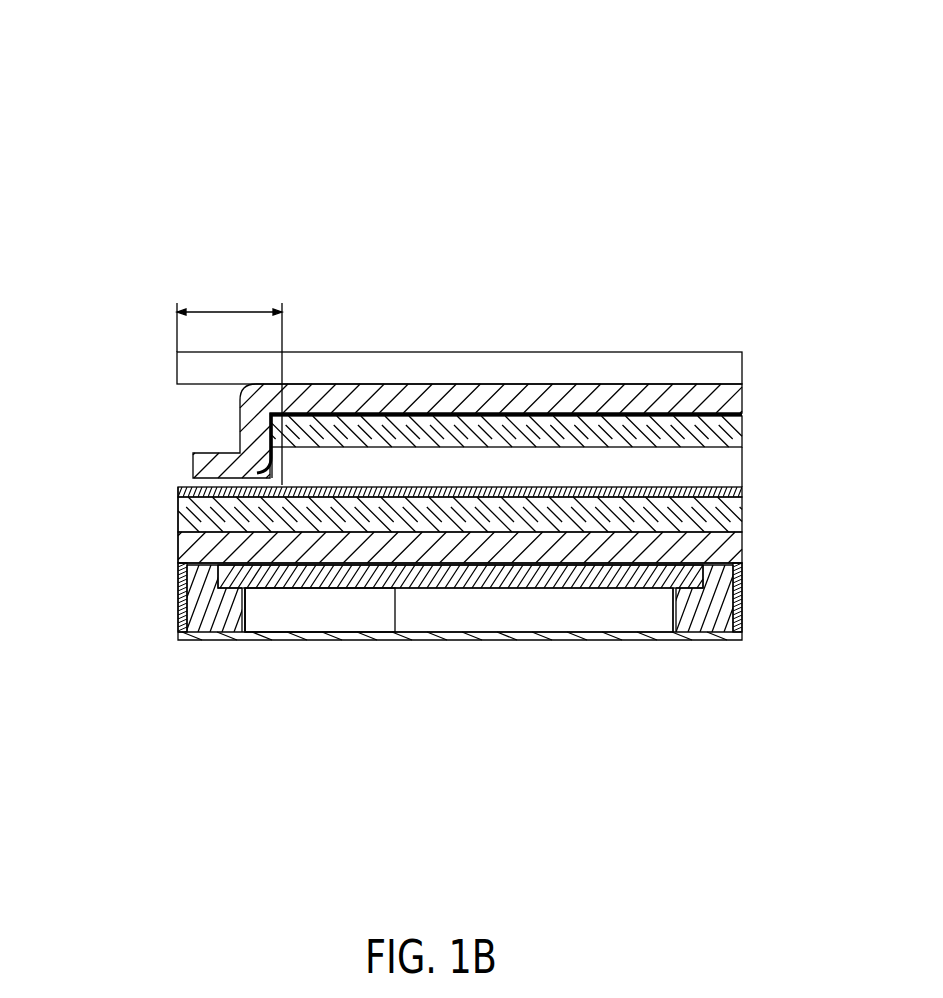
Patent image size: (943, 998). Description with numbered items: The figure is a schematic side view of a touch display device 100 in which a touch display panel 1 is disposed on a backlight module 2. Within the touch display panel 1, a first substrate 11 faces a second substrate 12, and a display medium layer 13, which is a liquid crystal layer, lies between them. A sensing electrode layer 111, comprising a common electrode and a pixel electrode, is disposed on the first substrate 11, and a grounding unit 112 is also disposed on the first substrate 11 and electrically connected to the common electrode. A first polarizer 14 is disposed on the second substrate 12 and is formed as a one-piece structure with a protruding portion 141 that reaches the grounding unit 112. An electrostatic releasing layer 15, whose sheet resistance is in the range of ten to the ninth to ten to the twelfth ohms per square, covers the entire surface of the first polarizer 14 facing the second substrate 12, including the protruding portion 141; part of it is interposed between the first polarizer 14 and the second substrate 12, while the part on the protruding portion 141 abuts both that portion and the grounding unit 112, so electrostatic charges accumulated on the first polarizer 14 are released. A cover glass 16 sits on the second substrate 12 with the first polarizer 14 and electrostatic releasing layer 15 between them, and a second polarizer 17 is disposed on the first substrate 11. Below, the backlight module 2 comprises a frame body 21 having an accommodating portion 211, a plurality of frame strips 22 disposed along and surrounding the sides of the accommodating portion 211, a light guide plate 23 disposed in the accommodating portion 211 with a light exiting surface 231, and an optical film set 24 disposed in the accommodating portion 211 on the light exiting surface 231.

The touch display device 100 is at (89, 52).
The touch display panel 1 is at (85, 333).
The protruding portion 141 is at (229, 383).
The cover glass 16 is at (177, 369).
The first polarizer 14 is at (272, 392).
The electrostatic releasing layer 15 is at (270, 413).
The second substrate 12 is at (295, 437).
The display medium layer 13 is at (290, 462).
The grounding unit 112 is at (182, 489).
The sensing electrode layer 111 is at (182, 496).
The first substrate 11 is at (180, 513).
The second polarizer 17 is at (180, 550).
The backlight module 2 is at (795, 713).
The frame body 21 is at (673, 628).
The accommodating portion 211 is at (745, 603).
The frame strips 22 is at (718, 612).
The optical film set 24 is at (491, 578).
The light guide plate 23 is at (565, 613).
The light exiting surface 231 is at (387, 598).